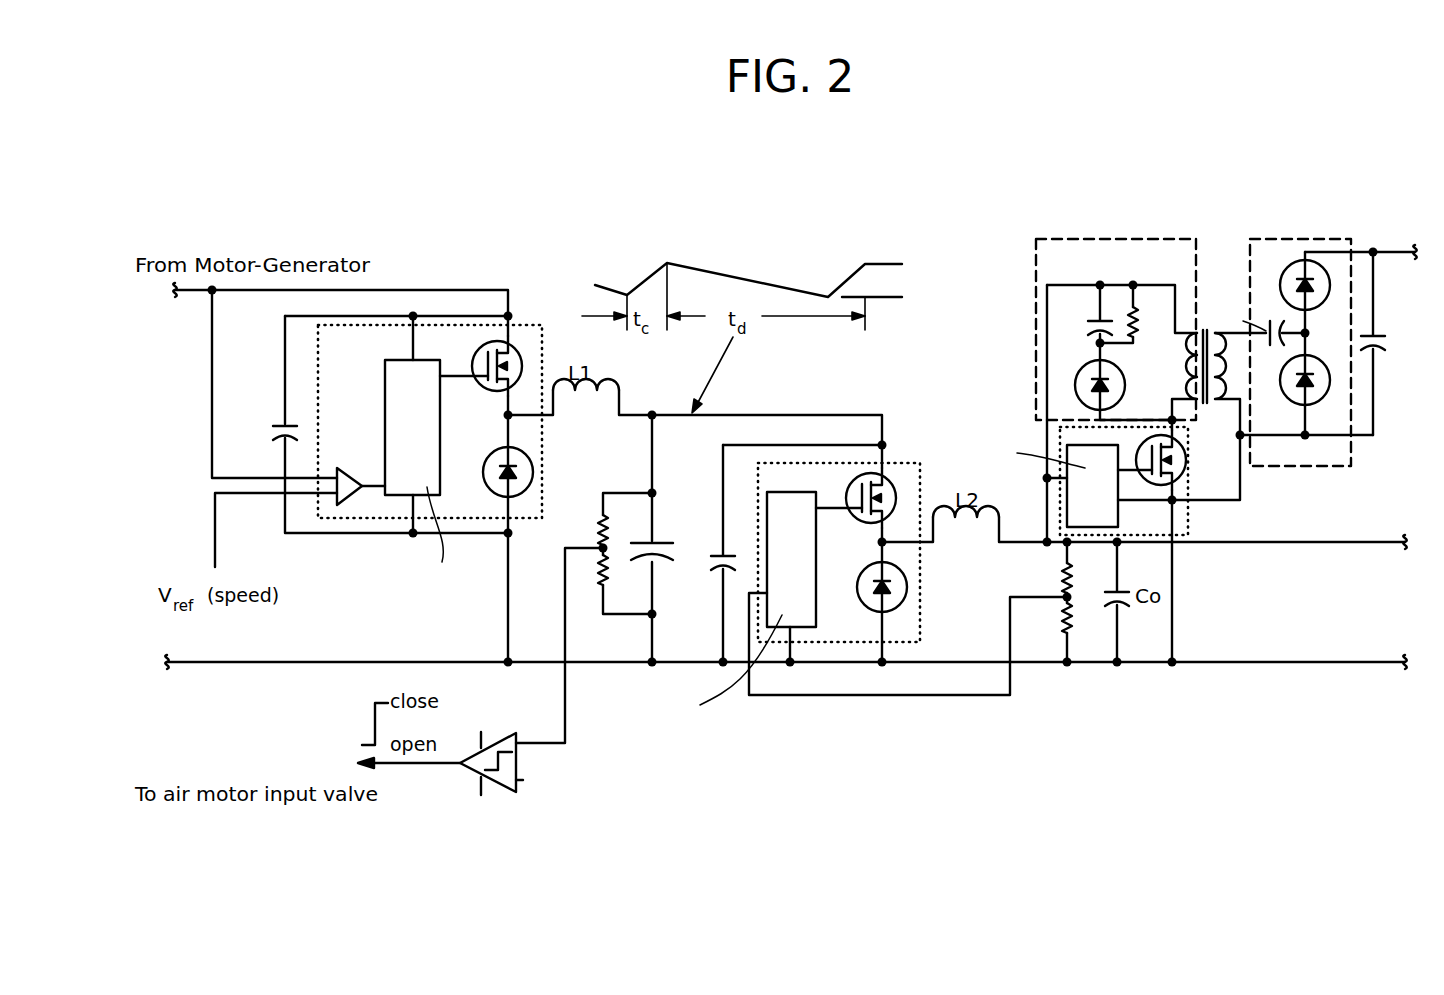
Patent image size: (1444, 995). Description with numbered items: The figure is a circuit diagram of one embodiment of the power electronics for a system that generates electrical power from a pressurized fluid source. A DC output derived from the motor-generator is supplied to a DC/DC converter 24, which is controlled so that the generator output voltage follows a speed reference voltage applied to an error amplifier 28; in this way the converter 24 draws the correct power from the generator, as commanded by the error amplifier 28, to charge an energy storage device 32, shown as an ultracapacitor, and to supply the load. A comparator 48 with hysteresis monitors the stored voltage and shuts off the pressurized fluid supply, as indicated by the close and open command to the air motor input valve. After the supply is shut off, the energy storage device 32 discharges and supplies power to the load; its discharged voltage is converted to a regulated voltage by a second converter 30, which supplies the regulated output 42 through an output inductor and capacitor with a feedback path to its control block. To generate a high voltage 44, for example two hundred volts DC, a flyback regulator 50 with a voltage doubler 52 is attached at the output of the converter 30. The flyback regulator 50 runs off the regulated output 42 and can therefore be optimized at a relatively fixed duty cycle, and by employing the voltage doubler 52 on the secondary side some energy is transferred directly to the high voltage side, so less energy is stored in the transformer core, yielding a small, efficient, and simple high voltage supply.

The DC/DC converter 24 is at (450, 325).
The error amplifier 28 is at (365, 505).
The second DC/DC converter 30 is at (805, 463).
The energy storage device 32 is at (665, 557).
The output 42 is at (1355, 665).
The high voltage 44 is at (1350, 543).
The comparator with hysteresis 48 is at (517, 735).
The flyback regulator 50 is at (1130, 239).
The voltage doubler 52 is at (1265, 239).